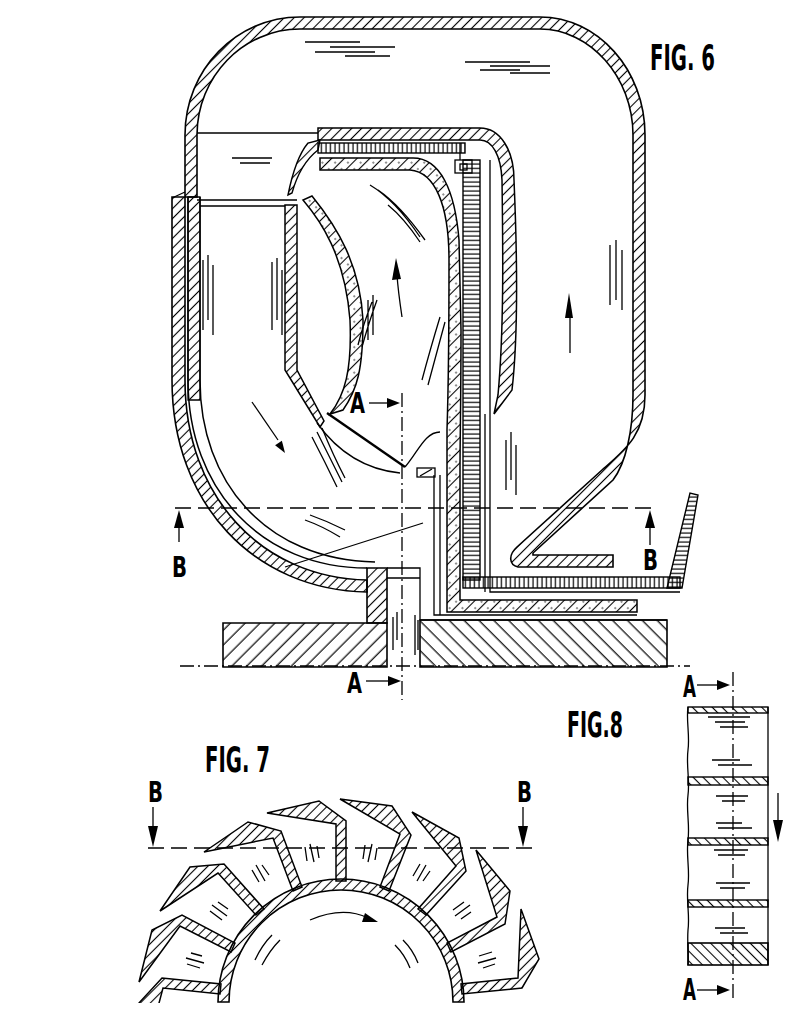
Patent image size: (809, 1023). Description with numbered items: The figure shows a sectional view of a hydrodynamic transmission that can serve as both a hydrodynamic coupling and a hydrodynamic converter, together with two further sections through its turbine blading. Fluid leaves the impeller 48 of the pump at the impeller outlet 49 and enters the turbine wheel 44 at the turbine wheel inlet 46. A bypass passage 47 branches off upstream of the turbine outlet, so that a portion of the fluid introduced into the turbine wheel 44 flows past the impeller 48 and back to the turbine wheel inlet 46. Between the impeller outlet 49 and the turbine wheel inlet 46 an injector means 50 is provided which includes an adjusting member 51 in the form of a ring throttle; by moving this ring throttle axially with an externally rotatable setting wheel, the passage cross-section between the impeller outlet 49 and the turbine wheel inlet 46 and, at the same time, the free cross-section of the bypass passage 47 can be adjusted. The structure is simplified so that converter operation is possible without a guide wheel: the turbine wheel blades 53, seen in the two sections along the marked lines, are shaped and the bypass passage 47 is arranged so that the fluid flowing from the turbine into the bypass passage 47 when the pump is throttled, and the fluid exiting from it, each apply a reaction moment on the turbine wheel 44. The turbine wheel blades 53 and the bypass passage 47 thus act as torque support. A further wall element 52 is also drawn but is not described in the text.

In FIG. 6, the turbine wheel 44 is at (240, 327).
In FIG. 6, the turbine wheel inlet 46 is at (183, 200).
In FIG. 6, the bypass passage 47 is at (368, 247).
In FIG. 6, the impeller 48 is at (573, 192).
In FIG. 6, the impeller outlet 49 is at (255, 122).
In FIG. 6, the injector means 50 is at (256, 183).
In FIG. 6, the adjusting member 51 is at (300, 163).
In FIG. 6, the heat exchanger ribbed wall 52 is at (477, 283).
In FIG. 7, the turbine wheel blades 53 is at (383, 813).
In FIG. 8, the turbine wheel blades 53 is at (690, 777).